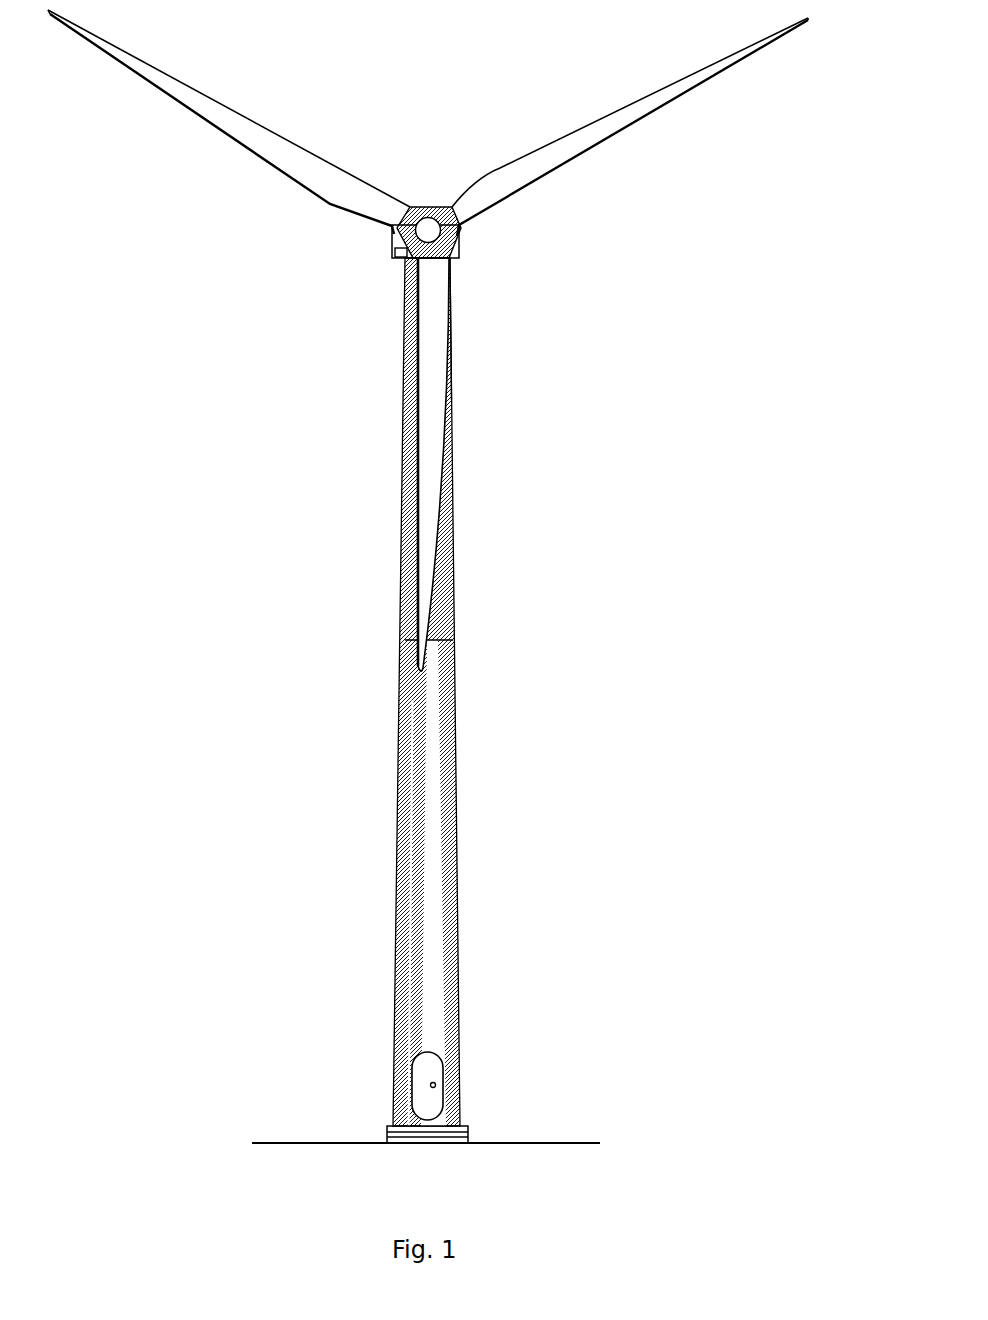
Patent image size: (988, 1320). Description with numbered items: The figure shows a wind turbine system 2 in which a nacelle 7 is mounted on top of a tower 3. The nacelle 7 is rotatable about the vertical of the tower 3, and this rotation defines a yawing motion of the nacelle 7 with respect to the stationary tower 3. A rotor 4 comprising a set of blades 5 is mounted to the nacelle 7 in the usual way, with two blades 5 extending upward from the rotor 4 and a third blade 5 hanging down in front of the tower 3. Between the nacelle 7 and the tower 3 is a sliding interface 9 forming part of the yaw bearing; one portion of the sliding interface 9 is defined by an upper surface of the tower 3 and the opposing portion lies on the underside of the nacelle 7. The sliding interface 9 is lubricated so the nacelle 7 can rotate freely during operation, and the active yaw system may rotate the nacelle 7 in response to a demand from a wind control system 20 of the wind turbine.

The wind turbine system 2 is at (708, 171).
The tower 3 is at (453, 717).
The rotor 4 is at (412, 208).
The blades 5 is at (310, 187).
The nacelle 7 is at (390, 234).
The sliding interface 9 is at (447, 268).
The wind control system 20 is at (395, 260).